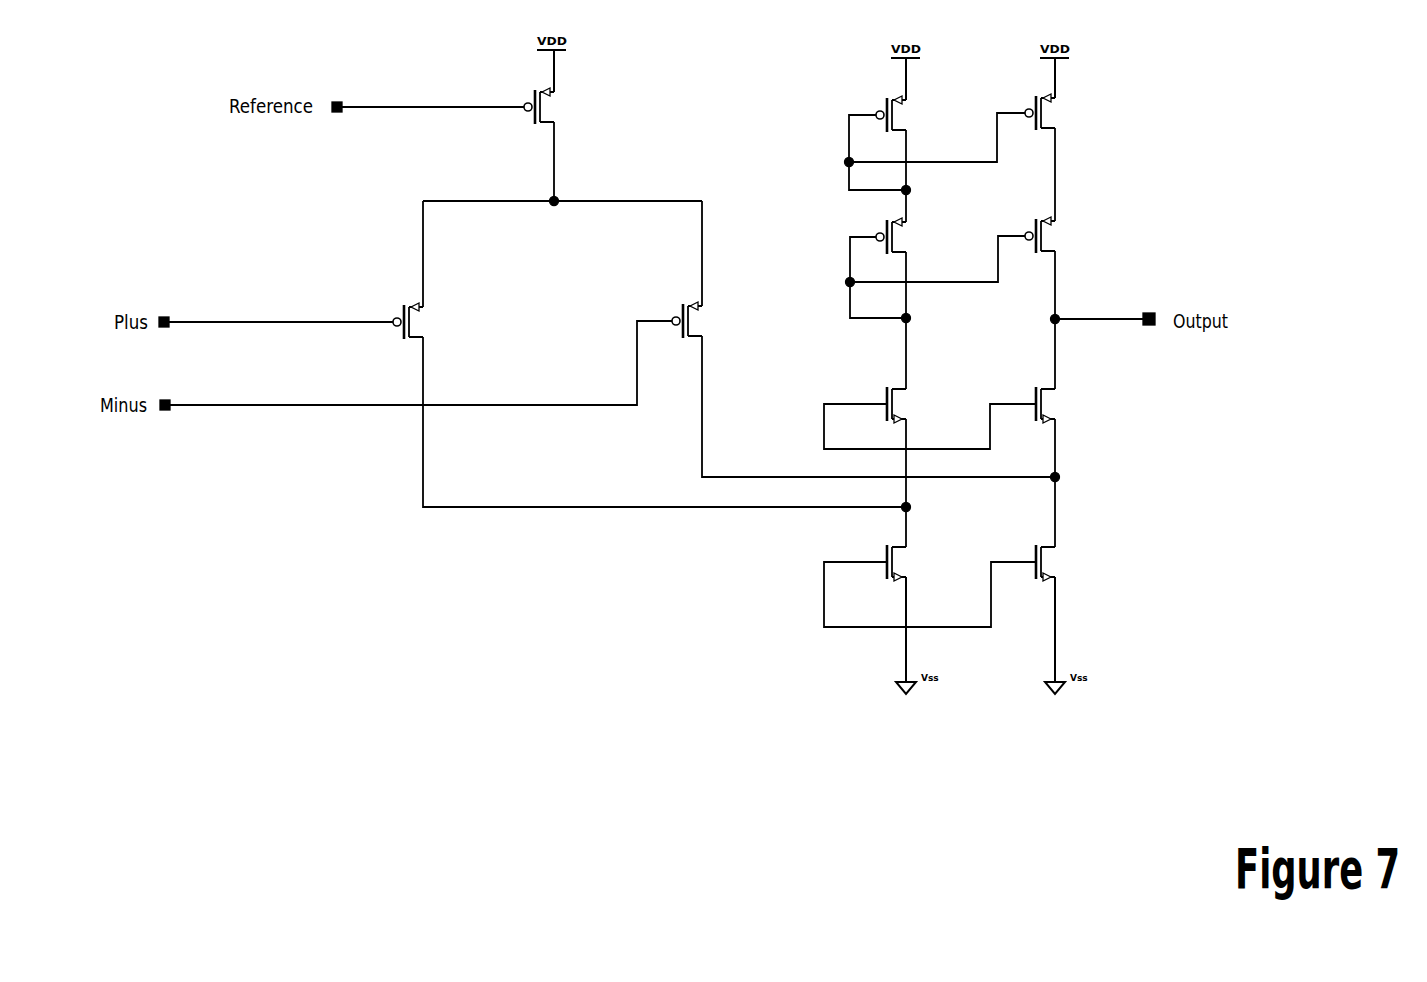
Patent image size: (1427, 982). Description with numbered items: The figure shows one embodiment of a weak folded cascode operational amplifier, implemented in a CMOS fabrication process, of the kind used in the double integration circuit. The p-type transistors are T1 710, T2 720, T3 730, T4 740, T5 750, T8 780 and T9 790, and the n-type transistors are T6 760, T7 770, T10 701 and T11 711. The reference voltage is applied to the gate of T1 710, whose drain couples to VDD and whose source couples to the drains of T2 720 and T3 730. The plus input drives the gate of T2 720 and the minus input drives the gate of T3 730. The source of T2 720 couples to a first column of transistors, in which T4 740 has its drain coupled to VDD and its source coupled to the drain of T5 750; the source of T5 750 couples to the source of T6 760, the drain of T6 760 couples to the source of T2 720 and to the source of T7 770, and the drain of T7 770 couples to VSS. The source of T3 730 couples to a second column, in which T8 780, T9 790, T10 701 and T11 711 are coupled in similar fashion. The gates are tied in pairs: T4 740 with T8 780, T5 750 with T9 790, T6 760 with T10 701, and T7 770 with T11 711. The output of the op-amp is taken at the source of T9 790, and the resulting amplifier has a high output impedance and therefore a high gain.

The transistor T1 710 is at (558, 104).
The transistor T2 720 is at (430, 324).
The transistor T3 730 is at (708, 322).
The transistor T4 740 is at (913, 118).
The transistor T5 750 is at (910, 239).
The transistor T6 760 is at (918, 404).
The transistor T7 770 is at (918, 562).
The transistor T8 780 is at (1059, 117).
The transistor T9 790 is at (1058, 236).
The transistor T10 701 is at (1065, 402).
The transistor T11 711 is at (1065, 562).